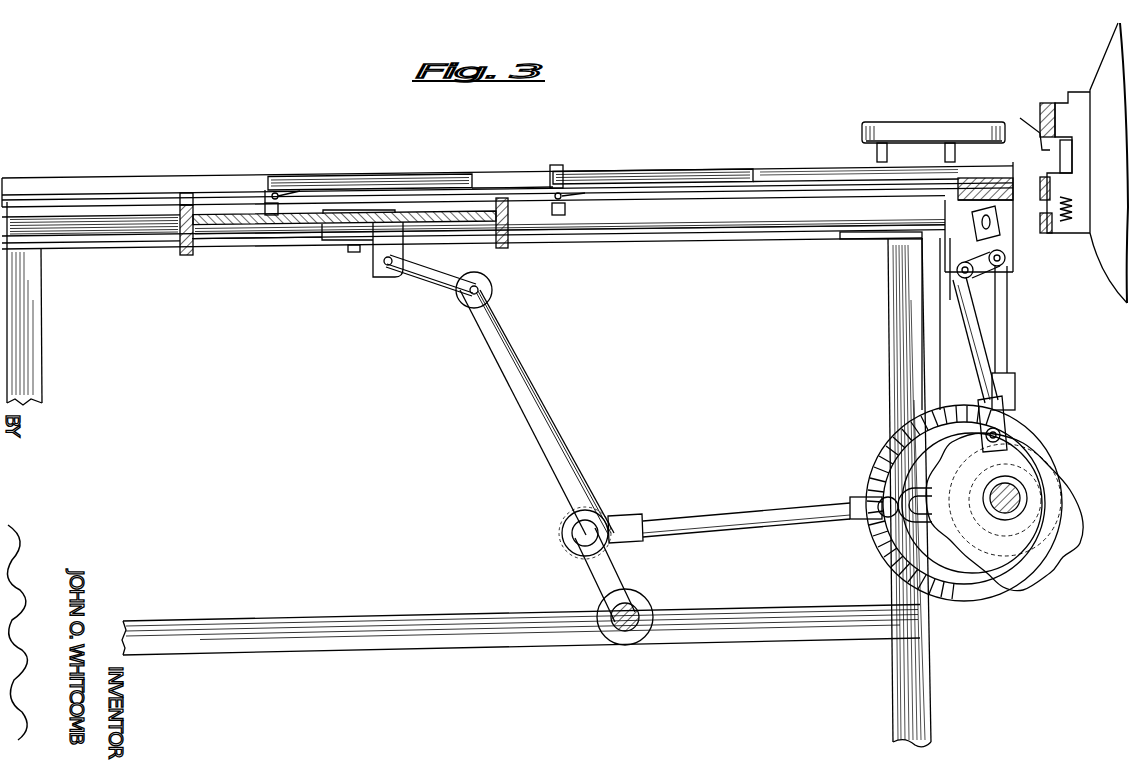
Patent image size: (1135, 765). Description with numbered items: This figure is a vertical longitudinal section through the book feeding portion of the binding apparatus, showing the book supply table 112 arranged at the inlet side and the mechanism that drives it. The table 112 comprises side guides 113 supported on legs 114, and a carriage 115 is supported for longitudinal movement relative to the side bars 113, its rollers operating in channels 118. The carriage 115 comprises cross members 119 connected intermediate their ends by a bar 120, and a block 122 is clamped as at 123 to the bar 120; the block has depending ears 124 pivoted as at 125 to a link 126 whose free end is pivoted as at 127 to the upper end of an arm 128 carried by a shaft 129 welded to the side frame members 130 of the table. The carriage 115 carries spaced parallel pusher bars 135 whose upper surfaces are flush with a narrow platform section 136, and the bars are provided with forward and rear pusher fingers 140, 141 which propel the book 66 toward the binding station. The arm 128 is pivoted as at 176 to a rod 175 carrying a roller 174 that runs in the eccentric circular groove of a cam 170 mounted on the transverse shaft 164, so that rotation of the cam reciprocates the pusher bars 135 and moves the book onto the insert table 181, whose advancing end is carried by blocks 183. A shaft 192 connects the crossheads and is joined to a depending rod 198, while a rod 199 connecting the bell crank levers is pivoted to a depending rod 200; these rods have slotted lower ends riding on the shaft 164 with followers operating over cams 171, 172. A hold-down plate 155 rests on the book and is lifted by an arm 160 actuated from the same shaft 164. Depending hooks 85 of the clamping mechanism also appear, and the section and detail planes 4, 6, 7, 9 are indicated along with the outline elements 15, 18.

The machine frame housing 15 is at (1108, 45).
The reference direction arrow 18 is at (1047, 92).
The book 66 is at (332, 178).
The depending hooks 85 is at (1045, 155).
The book supply table 112 is at (552, 158).
The side guides 113 is at (135, 242).
The legs 114 is at (36, 383).
The carriage 115 is at (268, 246).
The channels 118 is at (78, 230).
The cross members 119 is at (190, 255).
The bar 120 is at (306, 232).
The block 122 is at (340, 244).
The clamp 123 is at (383, 207).
The depending ears 124 is at (395, 266).
The pivot 125 is at (386, 266).
The link 126 is at (446, 287).
The pivot 127 is at (486, 290).
The arm 128 is at (547, 422).
The shaft 129 is at (630, 614).
The side frame members 130 is at (465, 647).
The pusher bars 135 is at (503, 188).
The platform section 136 is at (126, 198).
The forward pusher fingers 140 is at (566, 170).
The rear pusher fingers 141 is at (270, 174).
The hold-down plate 155 is at (902, 130).
The arm 160 is at (953, 300).
The transverse shaft 164 is at (1014, 492).
The cam 170 is at (893, 447).
The cam 171 is at (1037, 440).
The cam 172 is at (1076, 526).
The roller 174 is at (880, 476).
The rod 175 is at (754, 503).
The pivot 176 is at (590, 533).
The insert table 181 is at (826, 178).
The blocks 183 is at (957, 216).
The shaft 192 is at (1006, 258).
The depending rod 198 is at (1008, 360).
The rod 199 is at (957, 272).
The depending rod 200 is at (983, 362).
The section line 4- 4 is at (213, 190).
The section line 6- 6 is at (789, 152).
The section line 7- 7 is at (950, 243).
The section line 9- 9 is at (1019, 107).